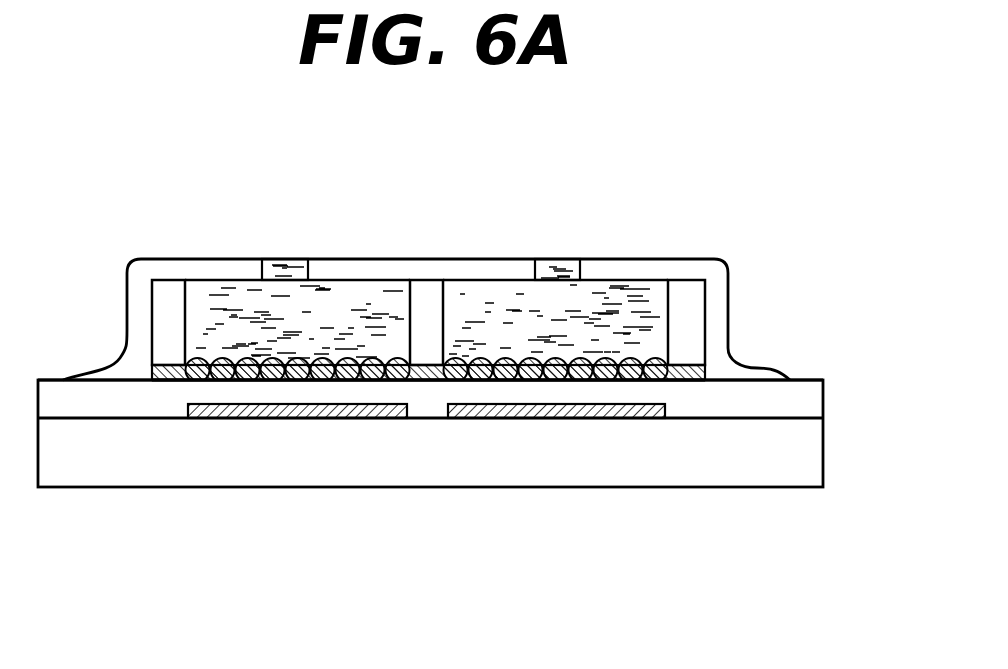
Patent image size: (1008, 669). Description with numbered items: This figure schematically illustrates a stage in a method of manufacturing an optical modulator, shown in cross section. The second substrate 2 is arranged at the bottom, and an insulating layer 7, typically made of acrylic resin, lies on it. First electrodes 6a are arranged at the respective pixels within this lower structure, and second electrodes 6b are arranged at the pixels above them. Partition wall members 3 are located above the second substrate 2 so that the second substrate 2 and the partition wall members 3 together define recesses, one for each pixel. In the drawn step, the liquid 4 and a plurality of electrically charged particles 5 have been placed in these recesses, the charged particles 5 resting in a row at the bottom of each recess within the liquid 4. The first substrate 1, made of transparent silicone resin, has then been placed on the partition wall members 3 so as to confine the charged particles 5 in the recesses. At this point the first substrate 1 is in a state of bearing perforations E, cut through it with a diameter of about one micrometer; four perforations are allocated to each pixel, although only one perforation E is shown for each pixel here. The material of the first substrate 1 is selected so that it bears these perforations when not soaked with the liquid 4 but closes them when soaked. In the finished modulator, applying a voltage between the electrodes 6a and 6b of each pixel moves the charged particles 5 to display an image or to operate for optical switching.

The first substrate 1 is at (652, 268).
The second substrate 2 is at (802, 452).
The partition wall members 3 is at (693, 302).
The liquid 4 is at (215, 297).
The charged particles 5 is at (350, 363).
The first electrodes 6a is at (290, 420).
The second electrodes 6b is at (703, 372).
The insulating layer 7 is at (800, 402).
The perforations E is at (287, 265).